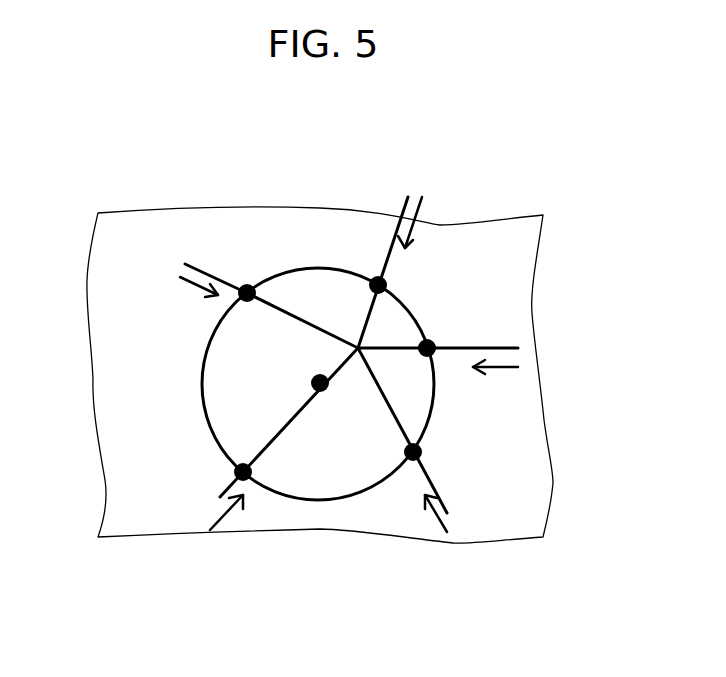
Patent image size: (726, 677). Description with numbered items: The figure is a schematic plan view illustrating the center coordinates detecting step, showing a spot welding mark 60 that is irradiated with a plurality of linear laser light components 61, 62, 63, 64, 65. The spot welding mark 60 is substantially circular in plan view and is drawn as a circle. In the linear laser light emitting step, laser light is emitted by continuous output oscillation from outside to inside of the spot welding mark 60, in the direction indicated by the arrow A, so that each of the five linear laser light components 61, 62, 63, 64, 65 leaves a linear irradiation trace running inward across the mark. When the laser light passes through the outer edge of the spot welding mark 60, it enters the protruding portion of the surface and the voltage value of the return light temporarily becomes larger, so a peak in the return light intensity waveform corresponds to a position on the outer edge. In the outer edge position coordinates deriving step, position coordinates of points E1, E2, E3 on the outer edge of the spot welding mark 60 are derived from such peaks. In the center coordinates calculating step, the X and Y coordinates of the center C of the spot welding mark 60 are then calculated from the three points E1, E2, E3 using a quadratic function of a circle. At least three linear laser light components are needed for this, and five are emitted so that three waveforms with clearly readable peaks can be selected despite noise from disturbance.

The spot welding mark 60 is at (260, 278).
The linear laser light component 61 is at (262, 448).
The linear laser light component 62 is at (440, 497).
The linear laser light component 63 is at (485, 348).
The linear laser light component 64 is at (398, 232).
The linear laser light component 65 is at (280, 310).
The point on the outer edge E1 is at (240, 475).
The point on the outer edge E2 is at (413, 452).
The point on the outer edge E3 is at (427, 348).
The center C is at (318, 381).
The arrow A is at (197, 286).